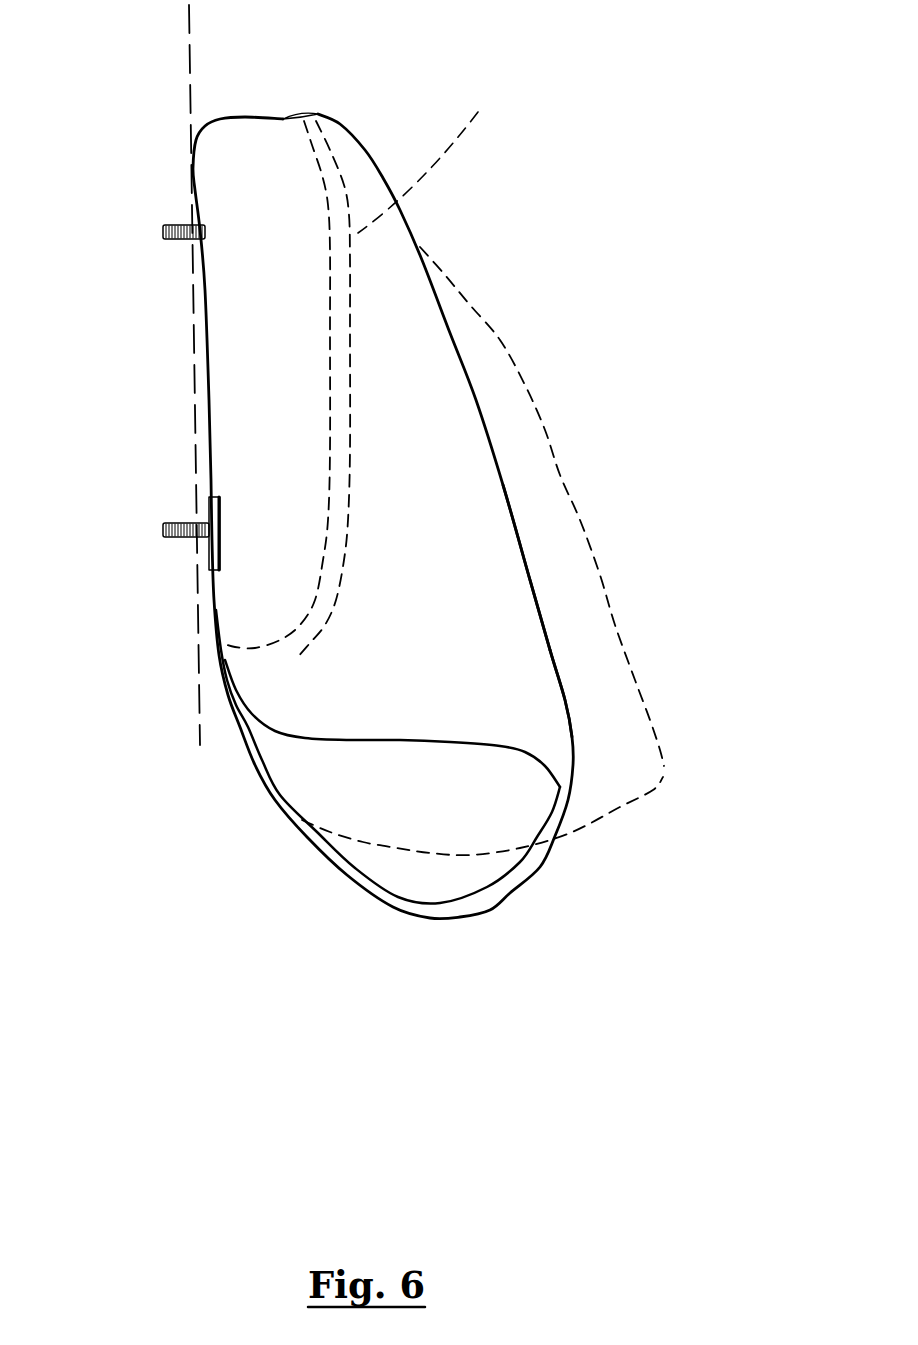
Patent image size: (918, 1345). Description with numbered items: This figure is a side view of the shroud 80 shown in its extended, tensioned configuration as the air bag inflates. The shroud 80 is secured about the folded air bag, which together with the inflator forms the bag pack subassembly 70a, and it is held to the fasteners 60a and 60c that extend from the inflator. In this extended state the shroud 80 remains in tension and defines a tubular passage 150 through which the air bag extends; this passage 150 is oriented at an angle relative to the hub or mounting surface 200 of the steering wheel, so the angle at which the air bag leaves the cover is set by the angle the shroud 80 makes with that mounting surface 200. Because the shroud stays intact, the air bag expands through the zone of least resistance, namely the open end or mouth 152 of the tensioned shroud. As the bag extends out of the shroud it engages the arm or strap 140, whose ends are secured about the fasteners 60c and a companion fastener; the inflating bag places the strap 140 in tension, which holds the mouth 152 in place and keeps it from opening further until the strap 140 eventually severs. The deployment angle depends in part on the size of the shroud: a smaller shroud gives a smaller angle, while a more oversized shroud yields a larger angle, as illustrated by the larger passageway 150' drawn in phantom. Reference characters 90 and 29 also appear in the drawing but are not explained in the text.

The hub or mounting surface 200 is at (197, 50).
The bag pack subassembly 70a is at (287, 160).
The reference plane 90 is at (425, 157).
The shroud 80 is at (450, 335).
The fastener 60c is at (180, 242).
The fastener 60a is at (158, 532).
The larger passageway 150' is at (558, 506).
The tubular passage 150 is at (640, 567).
The rear cavity region 29 is at (610, 696).
The open end or mouth 152 is at (664, 775).
The arm or strap 140 is at (445, 915).